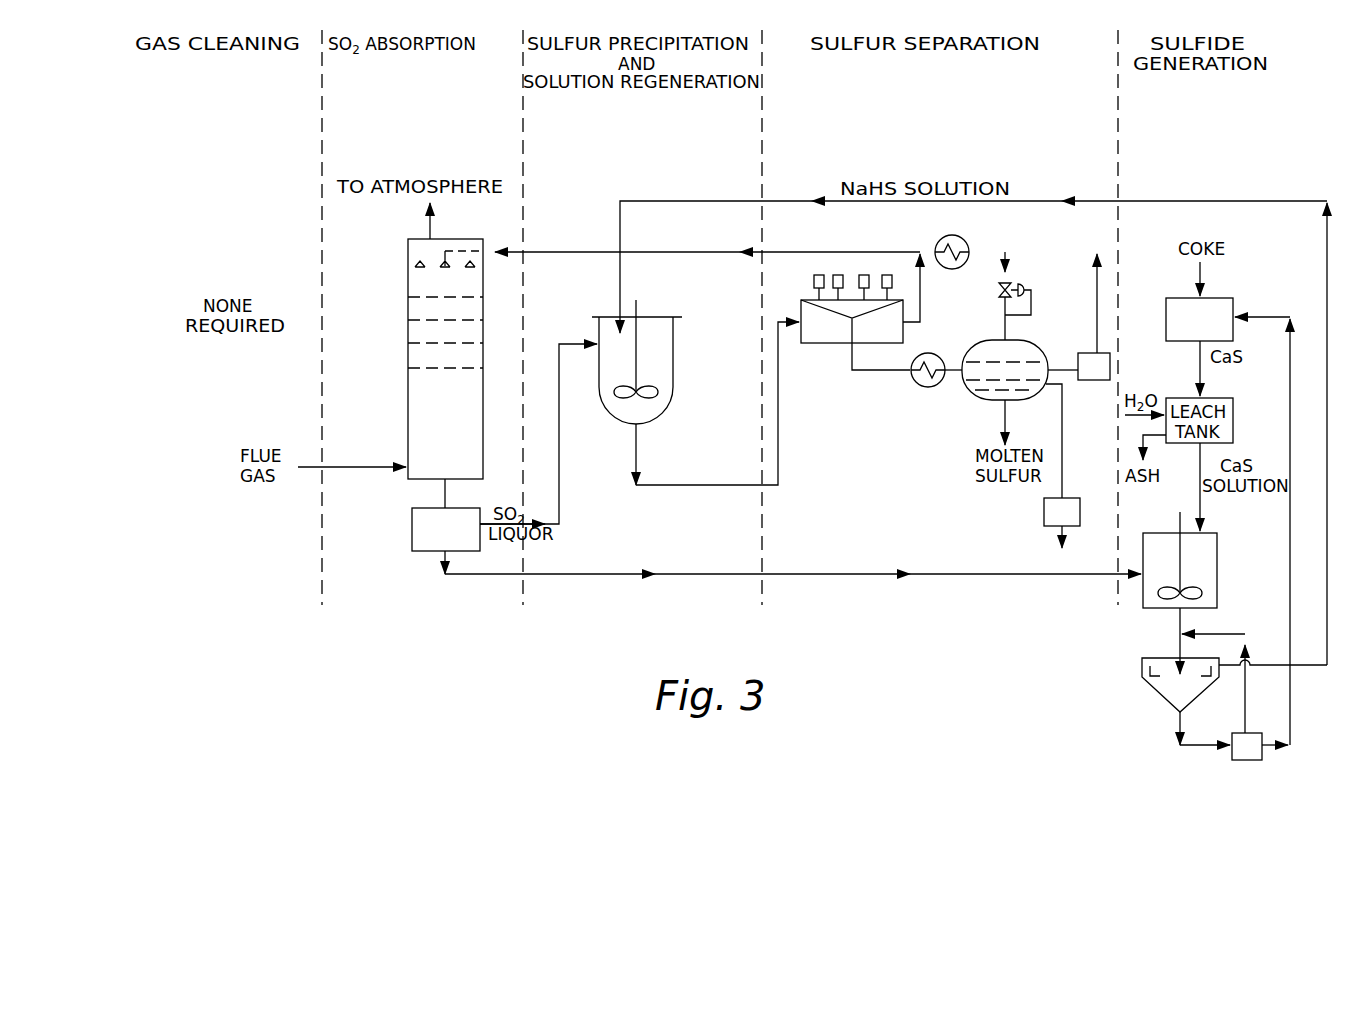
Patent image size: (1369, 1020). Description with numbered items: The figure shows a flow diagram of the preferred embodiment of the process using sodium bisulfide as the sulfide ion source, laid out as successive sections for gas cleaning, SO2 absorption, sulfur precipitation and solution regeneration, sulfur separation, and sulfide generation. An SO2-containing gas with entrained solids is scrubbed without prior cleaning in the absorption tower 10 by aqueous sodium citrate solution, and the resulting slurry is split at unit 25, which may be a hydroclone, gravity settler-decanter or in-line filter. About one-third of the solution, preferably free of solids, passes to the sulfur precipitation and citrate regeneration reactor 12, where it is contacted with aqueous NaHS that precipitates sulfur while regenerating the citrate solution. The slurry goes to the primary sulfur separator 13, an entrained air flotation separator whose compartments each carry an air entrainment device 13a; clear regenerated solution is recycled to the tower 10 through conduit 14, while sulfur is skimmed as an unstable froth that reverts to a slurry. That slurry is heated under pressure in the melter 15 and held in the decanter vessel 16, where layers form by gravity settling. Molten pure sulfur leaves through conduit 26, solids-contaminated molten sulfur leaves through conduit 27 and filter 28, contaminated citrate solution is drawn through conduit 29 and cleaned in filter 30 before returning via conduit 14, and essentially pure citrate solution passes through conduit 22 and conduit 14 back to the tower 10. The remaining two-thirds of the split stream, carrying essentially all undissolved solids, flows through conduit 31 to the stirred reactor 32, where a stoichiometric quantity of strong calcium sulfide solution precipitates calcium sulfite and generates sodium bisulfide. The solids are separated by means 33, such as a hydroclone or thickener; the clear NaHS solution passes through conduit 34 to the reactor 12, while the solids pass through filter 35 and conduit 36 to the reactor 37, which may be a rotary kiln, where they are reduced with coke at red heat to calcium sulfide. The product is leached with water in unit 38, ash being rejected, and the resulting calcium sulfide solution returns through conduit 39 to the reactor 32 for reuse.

The SO2 absorption tower 10 is at (408, 308).
The sulfur precipitation and citrate solution regeneration reactor 12 is at (615, 418).
The primary sulfur separator 13 is at (836, 343).
The air entrainment device 13a is at (887, 275).
The conduit 14 is at (640, 252).
The melter 15 is at (920, 387).
The decanter vessel 16 is at (975, 346).
The conduit 22 is at (1003, 272).
The splitting unit 25 is at (412, 535).
The conduit 26 is at (1003, 410).
The conduit 27 is at (1063, 430).
The filter 28 is at (1044, 512).
The conduit 29 is at (1065, 368).
The filter 30 is at (1095, 352).
The conduit 31 is at (680, 574).
The stirred reactor 32 is at (1217, 580).
The solids separating means 33 is at (1142, 665).
The conduit 34 is at (1327, 667).
The filter 35 is at (1232, 760).
The conduit 36 is at (1290, 392).
The reactor 37 is at (1222, 298).
The leaching unit 38 is at (1233, 425).
The conduit 39 is at (1205, 513).